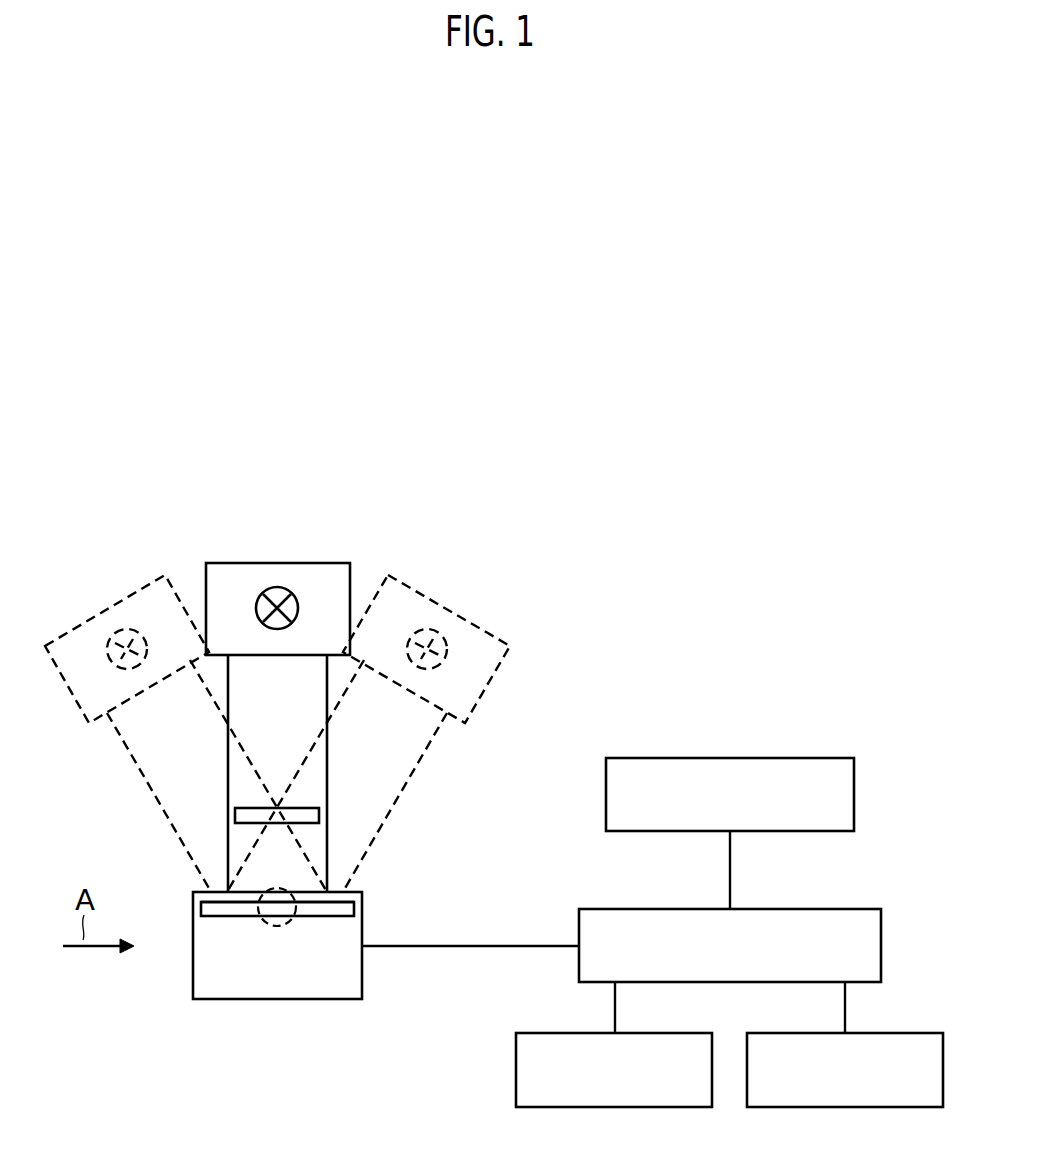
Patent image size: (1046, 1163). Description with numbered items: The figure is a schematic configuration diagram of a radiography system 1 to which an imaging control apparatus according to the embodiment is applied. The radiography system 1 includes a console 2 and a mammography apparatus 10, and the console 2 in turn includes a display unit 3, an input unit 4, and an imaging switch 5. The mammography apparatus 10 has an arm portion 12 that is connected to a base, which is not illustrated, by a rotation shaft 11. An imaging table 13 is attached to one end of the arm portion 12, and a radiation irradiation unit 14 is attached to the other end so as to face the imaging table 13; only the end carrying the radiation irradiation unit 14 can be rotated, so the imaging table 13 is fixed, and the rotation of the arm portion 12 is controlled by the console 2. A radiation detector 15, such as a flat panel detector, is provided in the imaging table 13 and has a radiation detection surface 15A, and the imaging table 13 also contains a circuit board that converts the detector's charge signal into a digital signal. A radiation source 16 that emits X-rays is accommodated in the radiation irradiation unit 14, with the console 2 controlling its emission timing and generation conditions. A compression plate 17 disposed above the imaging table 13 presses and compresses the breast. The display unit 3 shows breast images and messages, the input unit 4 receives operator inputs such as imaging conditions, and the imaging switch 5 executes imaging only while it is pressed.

The radiography system 1 is at (482, 440).
The console 2 is at (852, 909).
The display unit 3 is at (685, 1033).
The input unit 4 is at (917, 1033).
The imaging switch 5 is at (828, 758).
The mammography apparatus 10 is at (256, 512).
The rotation shaft 11 is at (277, 928).
The arm portion 12 is at (243, 700).
The imaging table 13 is at (335, 992).
The radiation irradiation unit 14 is at (346, 562).
The radiation detector 15 is at (365, 902).
The radiation detection surface 15A is at (333, 902).
The radiation source 16 is at (279, 587).
The compression plate 17 is at (240, 806).